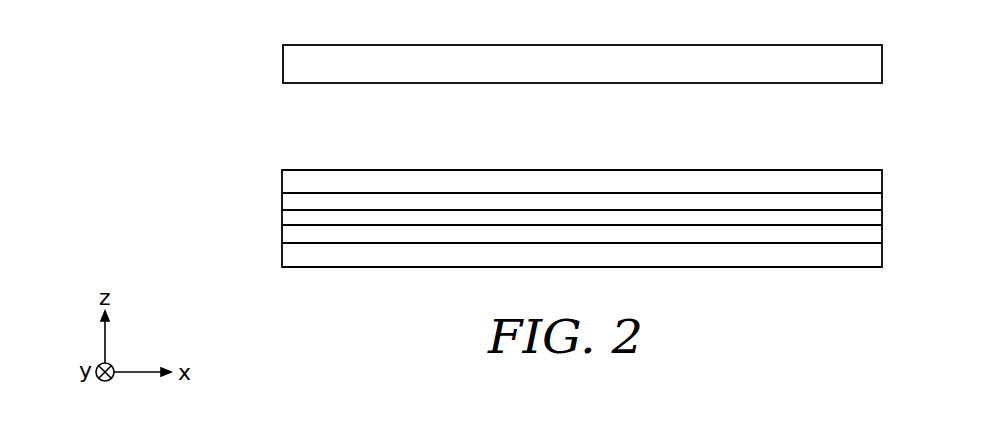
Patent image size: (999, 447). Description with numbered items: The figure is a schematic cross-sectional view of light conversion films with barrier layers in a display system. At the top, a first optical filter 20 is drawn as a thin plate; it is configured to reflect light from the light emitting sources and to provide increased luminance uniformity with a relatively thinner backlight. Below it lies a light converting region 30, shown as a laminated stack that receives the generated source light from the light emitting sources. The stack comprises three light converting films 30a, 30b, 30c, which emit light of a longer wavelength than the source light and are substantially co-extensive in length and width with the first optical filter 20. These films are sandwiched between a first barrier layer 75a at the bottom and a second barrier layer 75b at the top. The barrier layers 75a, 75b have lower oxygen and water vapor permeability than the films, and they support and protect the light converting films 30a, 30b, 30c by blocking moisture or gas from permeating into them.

The first optical filter 20 is at (870, 59).
The light converting region 30 is at (895, 192).
The light converting film 30a is at (293, 204).
The light converting film 30b is at (292, 220).
The light converting film 30c is at (290, 233).
The first barrier layer 75a is at (287, 255).
The second barrier layer 75b is at (290, 180).